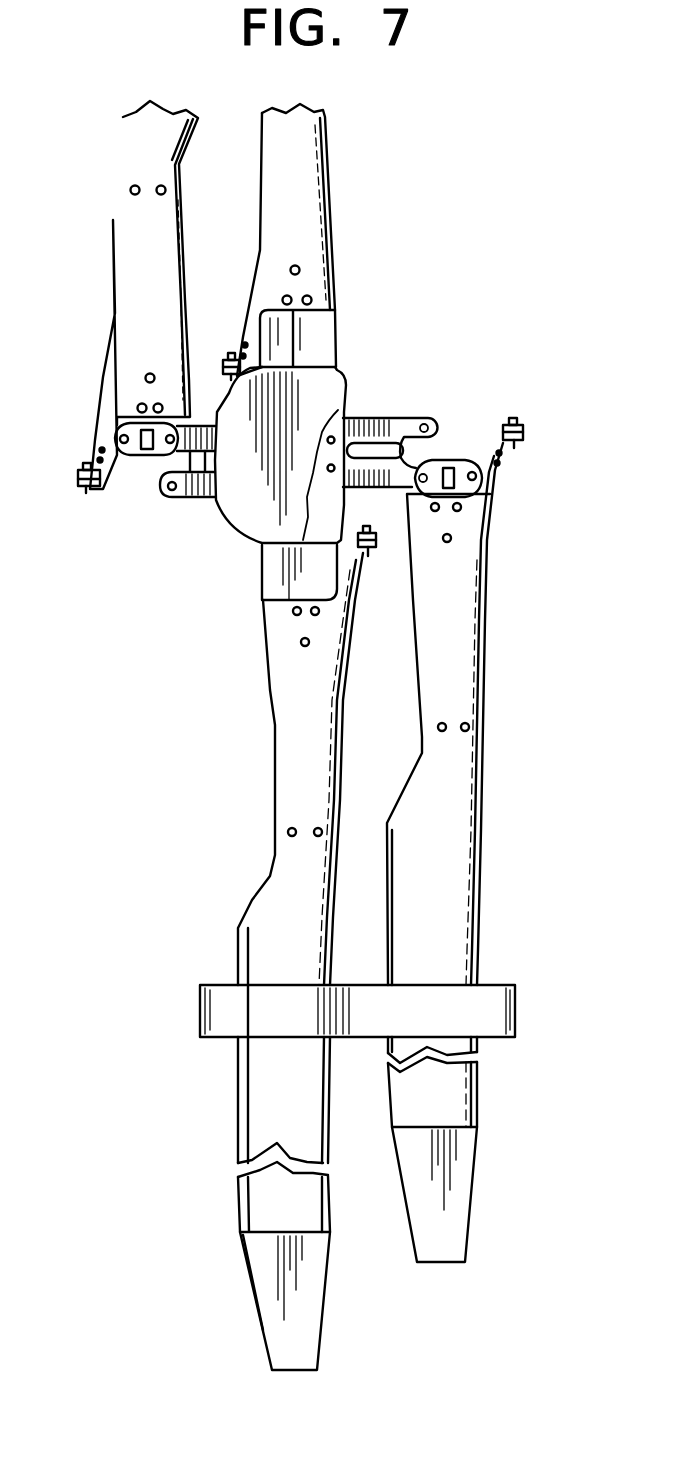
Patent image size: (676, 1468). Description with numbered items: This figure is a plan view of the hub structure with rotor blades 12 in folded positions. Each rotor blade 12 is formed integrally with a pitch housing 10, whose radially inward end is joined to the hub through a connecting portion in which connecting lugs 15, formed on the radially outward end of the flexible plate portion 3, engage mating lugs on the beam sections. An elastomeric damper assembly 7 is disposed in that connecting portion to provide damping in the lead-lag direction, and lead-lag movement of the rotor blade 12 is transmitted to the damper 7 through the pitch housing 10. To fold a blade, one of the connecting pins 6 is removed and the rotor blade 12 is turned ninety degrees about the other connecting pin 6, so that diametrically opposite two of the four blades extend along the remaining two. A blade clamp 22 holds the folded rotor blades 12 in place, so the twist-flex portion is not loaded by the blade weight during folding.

The flexible plate portion 3 is at (380, 417).
The connecting lugs 15 is at (421, 421).
The elastomeric damper assembly 7 is at (459, 457).
The connecting pin 6 is at (420, 476).
The pitch housing 10 is at (489, 556).
The rotor blade 12 is at (244, 919).
The blade clamp 22 is at (492, 1028).